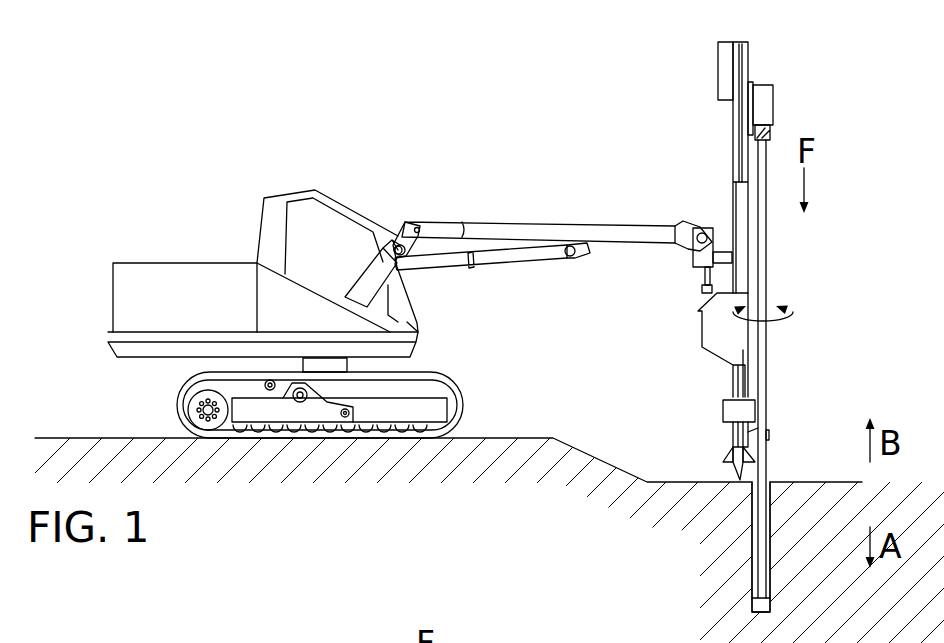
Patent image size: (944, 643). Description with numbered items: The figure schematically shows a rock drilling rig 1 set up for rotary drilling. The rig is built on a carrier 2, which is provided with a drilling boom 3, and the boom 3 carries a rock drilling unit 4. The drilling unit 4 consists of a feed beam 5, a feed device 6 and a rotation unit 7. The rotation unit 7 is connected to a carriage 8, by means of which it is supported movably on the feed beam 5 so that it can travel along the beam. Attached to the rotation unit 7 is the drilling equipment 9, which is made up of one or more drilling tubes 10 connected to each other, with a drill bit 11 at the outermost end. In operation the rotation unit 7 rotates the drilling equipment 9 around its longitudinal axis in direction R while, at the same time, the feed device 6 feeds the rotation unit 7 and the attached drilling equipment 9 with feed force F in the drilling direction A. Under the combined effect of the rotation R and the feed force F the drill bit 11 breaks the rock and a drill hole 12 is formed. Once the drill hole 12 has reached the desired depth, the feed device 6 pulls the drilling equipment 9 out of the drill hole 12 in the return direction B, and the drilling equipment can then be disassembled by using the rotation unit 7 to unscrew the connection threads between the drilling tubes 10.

The rock drilling rig 1 is at (202, 165).
The carrier 2 is at (388, 383).
The drilling boom 3 is at (525, 228).
The rock drilling unit 4 is at (818, 65).
The feed beam 5 is at (740, 155).
The feed device 6 is at (725, 72).
The rotation unit 7 is at (762, 110).
The carriage 8 is at (755, 95).
The drilling equipment 9 is at (820, 370).
The drilling tubes 10 is at (767, 248).
The drill bit 11 is at (752, 603).
The drill hole 12 is at (755, 512).